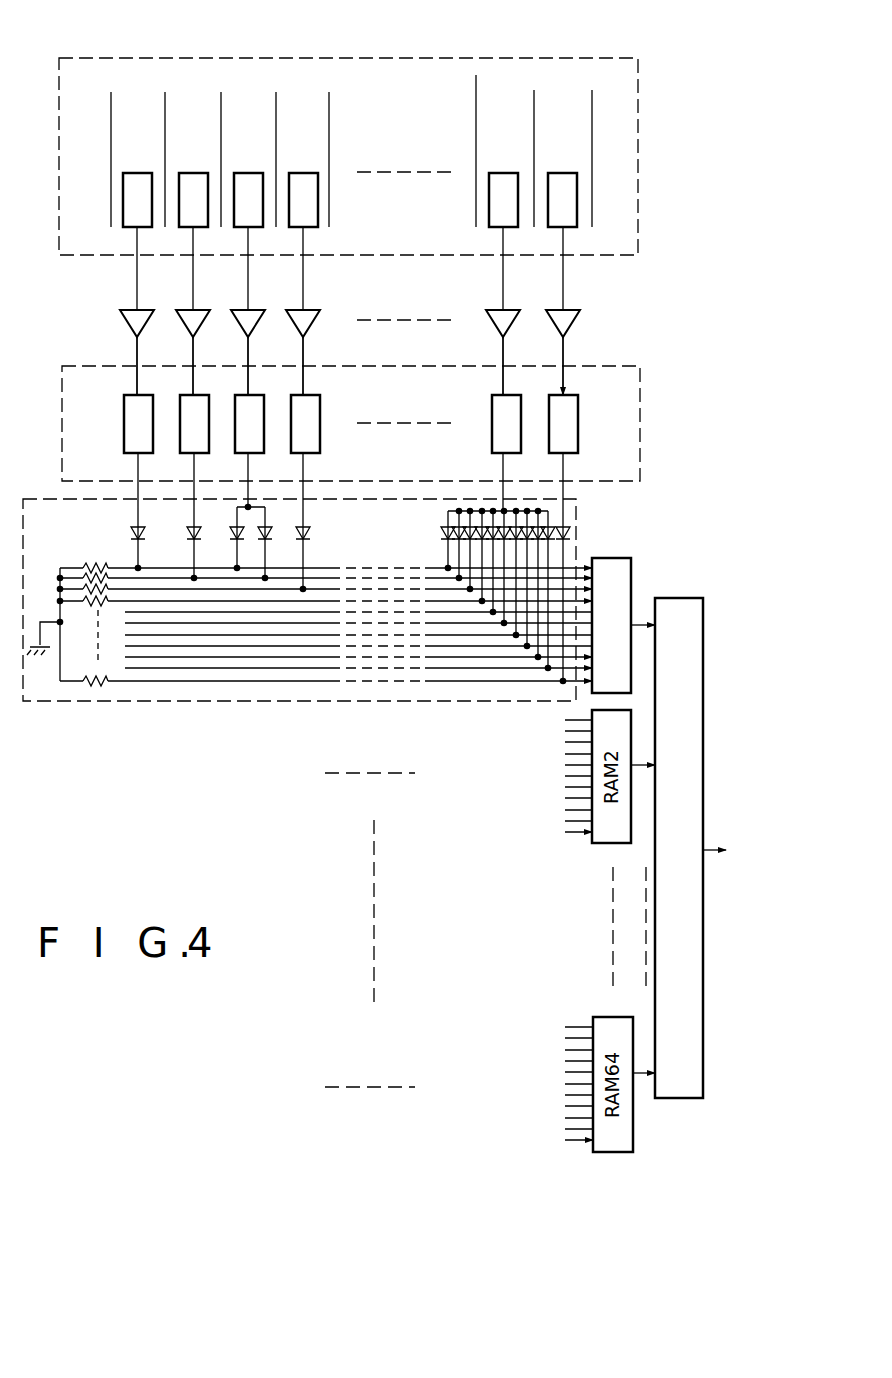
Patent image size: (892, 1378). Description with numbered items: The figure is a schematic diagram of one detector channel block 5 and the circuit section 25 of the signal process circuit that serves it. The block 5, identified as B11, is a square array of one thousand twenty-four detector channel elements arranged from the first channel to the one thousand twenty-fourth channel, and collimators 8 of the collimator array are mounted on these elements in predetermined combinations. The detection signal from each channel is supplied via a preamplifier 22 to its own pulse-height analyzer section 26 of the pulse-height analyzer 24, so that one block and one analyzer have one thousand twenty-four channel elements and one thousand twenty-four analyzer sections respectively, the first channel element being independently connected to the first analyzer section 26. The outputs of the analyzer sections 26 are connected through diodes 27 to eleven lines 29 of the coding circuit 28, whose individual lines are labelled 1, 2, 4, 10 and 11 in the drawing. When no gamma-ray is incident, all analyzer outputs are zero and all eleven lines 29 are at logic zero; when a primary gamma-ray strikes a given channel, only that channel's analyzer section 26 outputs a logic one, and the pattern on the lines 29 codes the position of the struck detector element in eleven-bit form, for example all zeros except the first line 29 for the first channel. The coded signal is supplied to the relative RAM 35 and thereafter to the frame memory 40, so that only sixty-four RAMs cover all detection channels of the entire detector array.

The detector channel block 5 is at (603, 58).
The collimator 8 is at (165, 149).
The preamplifier 22 is at (188, 306).
The circuit section 25 is at (610, 338).
The pulse-height analyzer 24 is at (640, 470).
The pulse-height analyzer section 26 is at (153, 440).
The diode 27 is at (131, 531).
The coding circuit 28 is at (578, 501).
The line 29 is at (160, 682).
The coding line 1 is at (326, 560).
The coding line 2 is at (140, 576).
The coding line 4 is at (130, 602).
The coding line 10 is at (137, 668).
The coding line 11 is at (326, 674).
The RAM 35 is at (631, 562).
The frame memory 40 is at (703, 598).